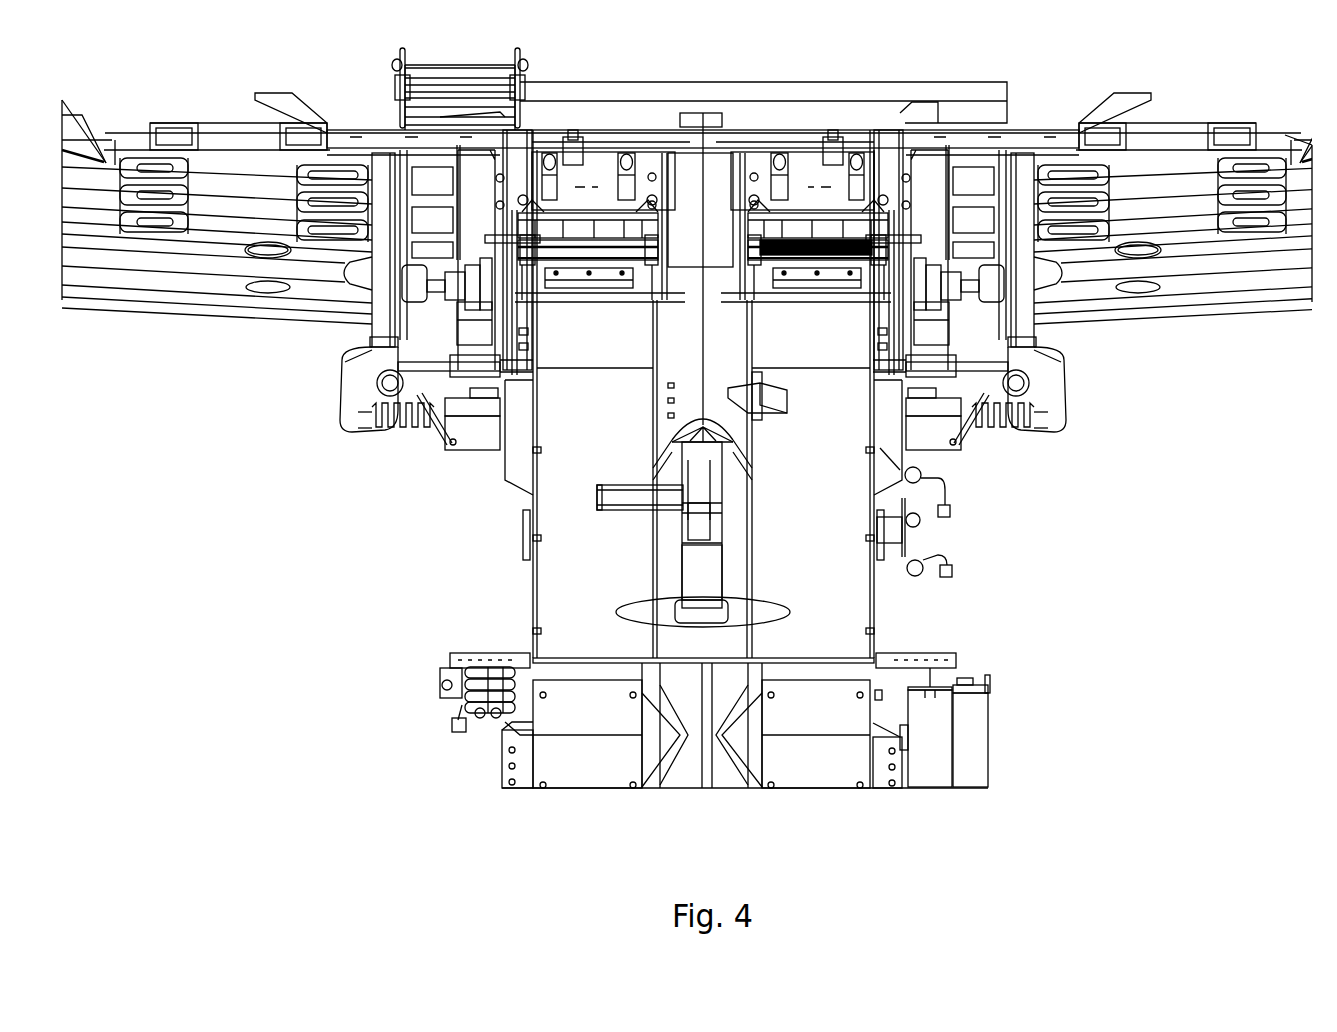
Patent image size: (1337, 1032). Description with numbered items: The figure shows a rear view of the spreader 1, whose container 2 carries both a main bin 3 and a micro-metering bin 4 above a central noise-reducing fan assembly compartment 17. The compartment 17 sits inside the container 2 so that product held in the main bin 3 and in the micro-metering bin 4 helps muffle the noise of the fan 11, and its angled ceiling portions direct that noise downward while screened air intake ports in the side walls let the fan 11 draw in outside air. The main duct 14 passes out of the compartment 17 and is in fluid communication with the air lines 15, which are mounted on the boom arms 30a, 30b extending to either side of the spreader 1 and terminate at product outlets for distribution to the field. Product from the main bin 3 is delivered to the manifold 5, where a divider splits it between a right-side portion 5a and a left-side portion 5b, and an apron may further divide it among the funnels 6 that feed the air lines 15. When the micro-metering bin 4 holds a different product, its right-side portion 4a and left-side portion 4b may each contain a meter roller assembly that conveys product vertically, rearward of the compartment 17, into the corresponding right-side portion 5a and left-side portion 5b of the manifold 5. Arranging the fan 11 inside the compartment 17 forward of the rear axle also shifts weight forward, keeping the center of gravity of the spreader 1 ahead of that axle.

The spreader 1 is at (212, 475).
The container 2 is at (530, 638).
The main bin 3 is at (598, 765).
The micro-metering bin 4 is at (703, 164).
The right-side portion of the micro-metering bin 4a is at (623, 245).
The left-side portion of the micro-metering bin 4b is at (780, 242).
The manifold 5 is at (703, 112).
The right-side portion of the manifold 5a is at (565, 185).
The left-side portion of the manifold 5b is at (832, 183).
The funnels 6 is at (608, 205).
The fan 11 is at (697, 558).
The main duct 14 is at (687, 393).
The air lines 15 is at (235, 185).
The noise-reducing fan assembly compartment 17 is at (742, 527).
The left wing 30a is at (148, 280).
The right wing 30b is at (1147, 293).